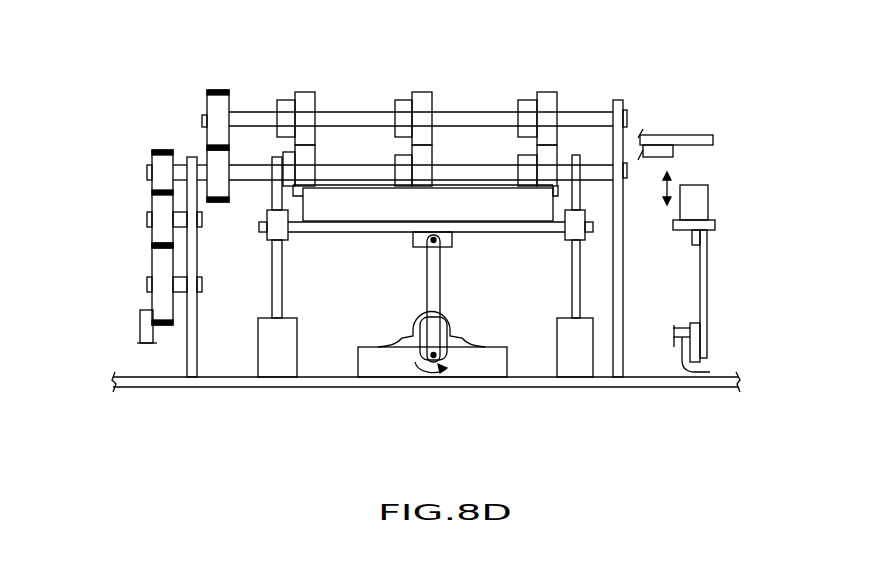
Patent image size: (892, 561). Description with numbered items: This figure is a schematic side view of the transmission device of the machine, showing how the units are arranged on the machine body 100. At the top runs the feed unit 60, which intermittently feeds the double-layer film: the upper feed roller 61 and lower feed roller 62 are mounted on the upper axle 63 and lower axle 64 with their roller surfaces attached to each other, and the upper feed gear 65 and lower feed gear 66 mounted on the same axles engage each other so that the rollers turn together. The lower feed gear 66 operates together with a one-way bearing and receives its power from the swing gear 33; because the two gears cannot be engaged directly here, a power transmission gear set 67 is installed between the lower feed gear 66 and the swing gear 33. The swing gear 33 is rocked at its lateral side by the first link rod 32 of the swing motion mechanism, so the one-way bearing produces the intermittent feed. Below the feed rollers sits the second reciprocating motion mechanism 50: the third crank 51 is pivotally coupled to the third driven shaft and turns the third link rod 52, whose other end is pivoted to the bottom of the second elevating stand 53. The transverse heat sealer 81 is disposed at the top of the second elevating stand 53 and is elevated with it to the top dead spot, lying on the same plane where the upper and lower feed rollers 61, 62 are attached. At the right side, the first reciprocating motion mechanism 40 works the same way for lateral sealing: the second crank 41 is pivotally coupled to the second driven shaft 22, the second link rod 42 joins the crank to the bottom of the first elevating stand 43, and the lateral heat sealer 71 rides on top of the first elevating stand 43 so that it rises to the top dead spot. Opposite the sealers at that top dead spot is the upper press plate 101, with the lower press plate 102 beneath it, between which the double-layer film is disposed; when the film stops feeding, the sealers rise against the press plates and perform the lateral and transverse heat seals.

The machine body 100 is at (137, 383).
The feed unit 60 is at (185, 137).
The upper feed gear 65 is at (217, 110).
The lower feed gear 66 is at (220, 160).
The upper axle 63 is at (327, 122).
The lower axle 64 is at (368, 172).
The upper feed roller 61 is at (425, 105).
The lower feed roller 62 is at (427, 158).
The power transmission gear set 67 is at (165, 173).
The swing gear 33 is at (163, 267).
The first link rod 32 is at (150, 323).
The transverse heat sealer 81 is at (343, 202).
The second elevating stand 53 is at (532, 225).
The second reciprocating motion mechanism 50 is at (408, 257).
The third link rod 52 is at (435, 270).
The third crank 51 is at (447, 330).
The upper press plate 101 is at (698, 140).
The lower press plate 102 is at (658, 148).
The lateral heat sealer 71 is at (700, 203).
The first reciprocating motion mechanism 40 is at (783, 235).
The first elevating stand 43 is at (700, 227).
The second link rod 42 is at (702, 283).
The second crank 41 is at (695, 348).
The second driven shaft 22 is at (703, 372).